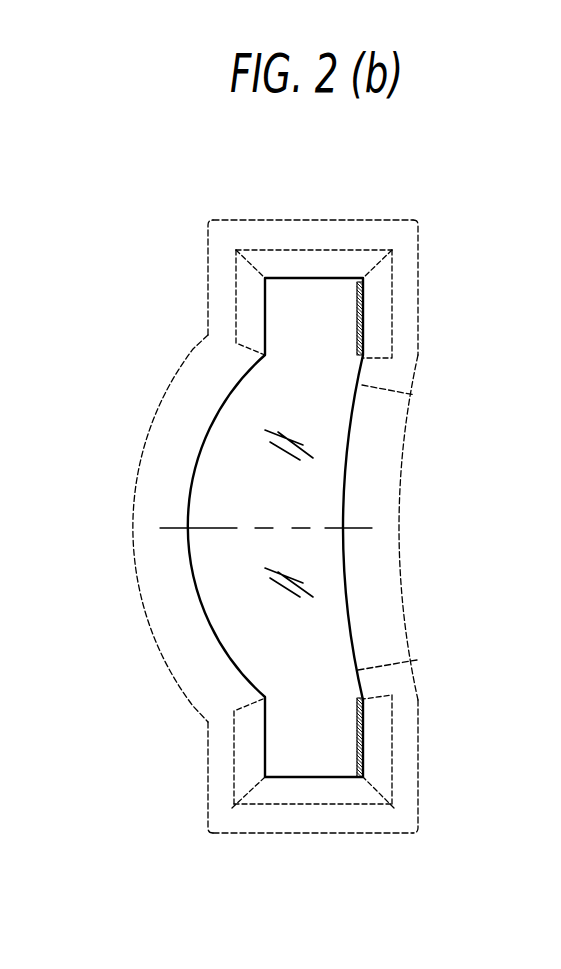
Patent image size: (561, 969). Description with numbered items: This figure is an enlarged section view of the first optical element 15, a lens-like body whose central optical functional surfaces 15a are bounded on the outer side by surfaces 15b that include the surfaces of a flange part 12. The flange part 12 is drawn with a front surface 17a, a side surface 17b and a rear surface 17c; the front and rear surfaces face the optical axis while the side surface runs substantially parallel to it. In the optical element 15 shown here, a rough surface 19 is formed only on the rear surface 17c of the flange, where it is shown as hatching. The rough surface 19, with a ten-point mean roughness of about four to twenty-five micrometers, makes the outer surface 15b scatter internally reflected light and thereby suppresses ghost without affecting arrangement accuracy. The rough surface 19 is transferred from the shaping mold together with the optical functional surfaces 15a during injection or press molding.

The flange part 12 is at (278, 292).
The first optical element 15 is at (275, 527).
The optical functional surface 15a is at (407, 617).
The surface located on the outer side with respect to the optical functional surface 15b is at (318, 220).
The front surface of flange part 17a is at (236, 289).
The side surface of flange part 17b is at (362, 250).
The rear surface of flange part 17c is at (392, 308).
The rough surface 19 is at (363, 351).